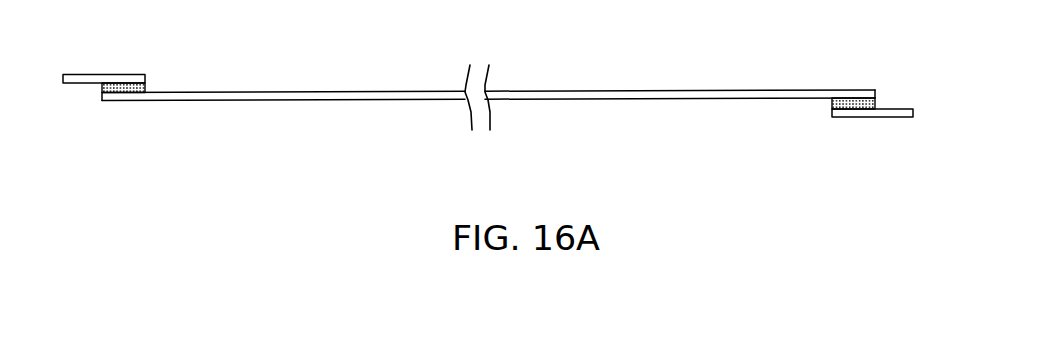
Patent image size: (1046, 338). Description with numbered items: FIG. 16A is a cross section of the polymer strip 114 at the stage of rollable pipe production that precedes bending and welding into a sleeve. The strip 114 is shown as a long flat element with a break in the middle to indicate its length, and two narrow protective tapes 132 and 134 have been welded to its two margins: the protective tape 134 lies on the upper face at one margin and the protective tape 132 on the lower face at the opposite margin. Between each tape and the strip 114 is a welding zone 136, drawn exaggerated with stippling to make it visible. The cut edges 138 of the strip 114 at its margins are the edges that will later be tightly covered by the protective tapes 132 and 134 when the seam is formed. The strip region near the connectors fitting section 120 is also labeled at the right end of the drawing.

The polymer strip 114 is at (685, 90).
The connectors fitting section 120 is at (877, 92).
The protective tape 132 is at (873, 117).
The protective tape 134 is at (103, 74).
The welding zone 136 is at (145, 88).
The cut edge 138 is at (102, 92).